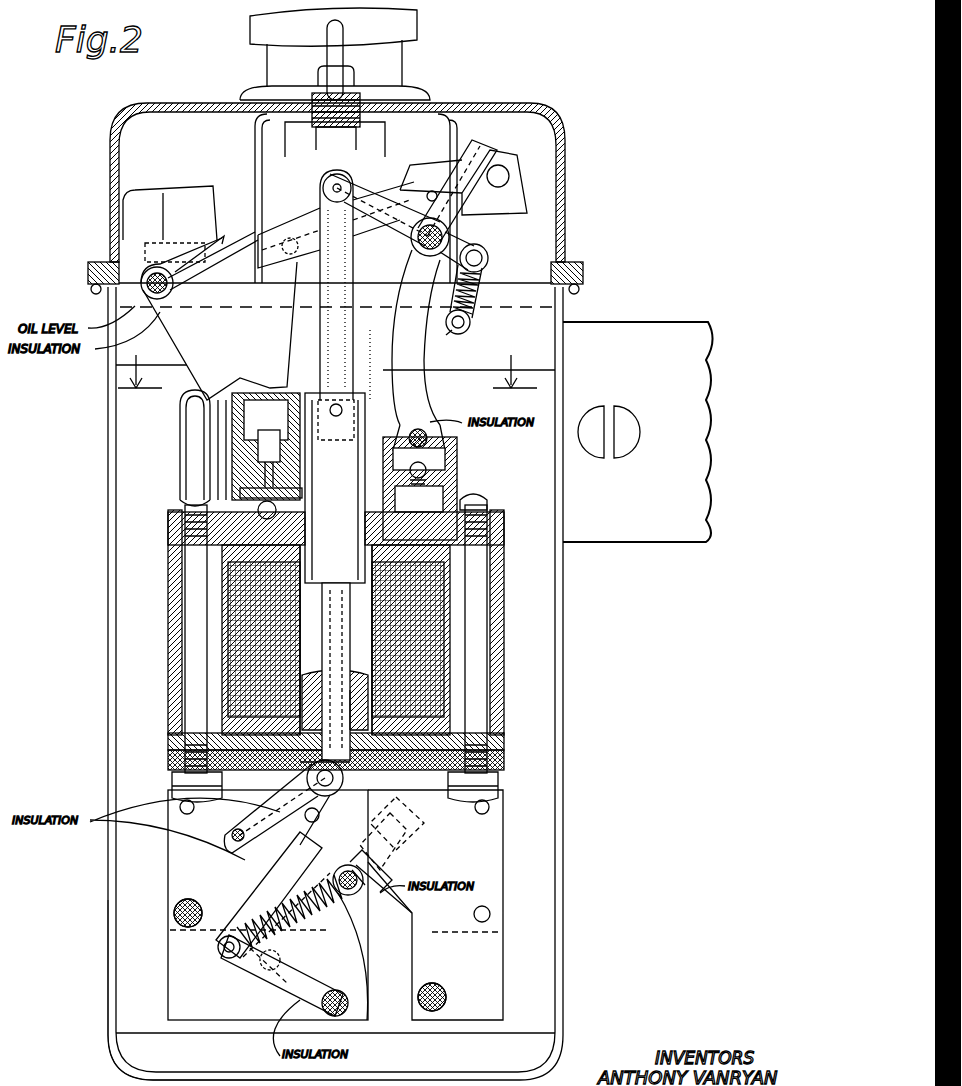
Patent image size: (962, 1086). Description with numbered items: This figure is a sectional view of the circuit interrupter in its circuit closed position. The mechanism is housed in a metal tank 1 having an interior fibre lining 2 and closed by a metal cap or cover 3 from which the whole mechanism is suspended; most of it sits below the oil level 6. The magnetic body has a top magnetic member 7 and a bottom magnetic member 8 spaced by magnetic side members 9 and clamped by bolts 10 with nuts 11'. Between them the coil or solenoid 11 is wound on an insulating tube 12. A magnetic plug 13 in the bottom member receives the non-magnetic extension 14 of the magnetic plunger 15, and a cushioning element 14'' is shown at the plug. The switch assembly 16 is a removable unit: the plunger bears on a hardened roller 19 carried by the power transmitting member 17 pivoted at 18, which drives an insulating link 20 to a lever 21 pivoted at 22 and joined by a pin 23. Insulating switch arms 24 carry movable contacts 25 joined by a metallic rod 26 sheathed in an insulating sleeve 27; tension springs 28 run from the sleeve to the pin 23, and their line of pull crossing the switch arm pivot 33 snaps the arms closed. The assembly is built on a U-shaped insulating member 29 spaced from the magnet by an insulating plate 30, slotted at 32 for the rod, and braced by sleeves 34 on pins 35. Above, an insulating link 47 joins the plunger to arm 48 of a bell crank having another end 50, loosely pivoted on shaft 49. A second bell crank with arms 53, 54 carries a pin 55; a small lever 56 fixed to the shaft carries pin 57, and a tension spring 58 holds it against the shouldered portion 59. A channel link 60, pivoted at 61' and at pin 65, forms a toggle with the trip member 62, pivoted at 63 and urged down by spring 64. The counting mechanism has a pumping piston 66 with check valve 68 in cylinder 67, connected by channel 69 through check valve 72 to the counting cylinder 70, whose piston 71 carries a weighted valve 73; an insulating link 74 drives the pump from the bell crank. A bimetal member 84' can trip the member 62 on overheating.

The tank 1 is at (563, 636).
The interior fibre lining 2 is at (556, 662).
The cap or cover 3 is at (562, 182).
The oil level 6 is at (234, 309).
The top magnetic member 7 is at (507, 522).
The bottom magnetic member 8 is at (504, 740).
The magnetic side members 9 is at (498, 622).
The bolts 10 is at (478, 584).
The magnetic coil or solenoid 11 is at (295, 640).
The nuts 11' is at (325, 791).
The insulating cylinder or tube 12 is at (308, 618).
The magnetic plug 13 is at (333, 690).
The non-magnetic plunger or extension 14 is at (324, 671).
The rod end 14'' is at (365, 680).
The magnetic plunger or armature 15 is at (366, 425).
The switch assembly 16 is at (540, 808).
The power transmitting member 17 is at (234, 840).
The pivot 18 is at (230, 836).
The hardened metal roller 19 is at (344, 778).
The insulating link 20 is at (262, 890).
The lever 21 is at (308, 980).
The pivot 22 is at (350, 994).
The pin 23 is at (222, 952).
The insulating switch arms 24 is at (372, 902).
The movable contact members 25 is at (420, 830).
The metallic rod 26 is at (352, 868).
The insulating sleeve 27 is at (368, 876).
The tension springs 28 is at (290, 930).
The U-shaped insulating member 29 is at (494, 870).
The insulating plate 30 is at (504, 756).
The slot 32 is at (408, 962).
The pivot point of the switch arms 33 is at (265, 978).
The insulating sleeves 34 is at (448, 995).
The pins 35 is at (428, 988).
The insulating link 47 is at (322, 368).
The arm of bell crank lever 48 is at (378, 190).
The shaft 49 is at (452, 236).
The other end of bell crank lever 50 is at (480, 146).
The arm of second bell crank lever 53 is at (517, 214).
The arm of second bell crank lever 54 is at (470, 322).
The pin 55 is at (456, 334).
The small arm or lever 56 is at (478, 246).
The pin 57 is at (490, 258).
The tension spring 58 is at (478, 294).
The shouldered portion 59 is at (450, 288).
The channel shape link 60 is at (310, 220).
The pivot 61' is at (280, 262).
The insulating strip member 62 is at (190, 343).
The pivot 63 is at (146, 274).
The spring 64 is at (200, 262).
The pivot pin 65 is at (507, 172).
The pumping piston 66 is at (426, 440).
The pumping cylinder 67 is at (458, 484).
The check valve 68 is at (428, 470).
The channel 69 is at (356, 510).
The counting cylinder 70 is at (232, 475).
The counting piston 71 is at (248, 448).
The upwardly opening check valve 72 is at (305, 498).
The weighted valve 73 is at (270, 432).
The insulating link 74 is at (428, 403).
The bimetal thermostatic member 84' is at (176, 448).